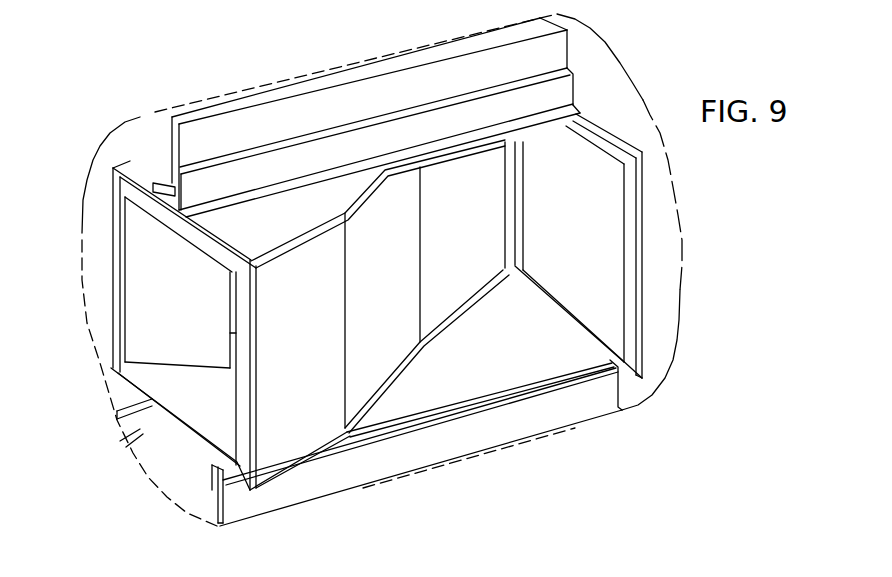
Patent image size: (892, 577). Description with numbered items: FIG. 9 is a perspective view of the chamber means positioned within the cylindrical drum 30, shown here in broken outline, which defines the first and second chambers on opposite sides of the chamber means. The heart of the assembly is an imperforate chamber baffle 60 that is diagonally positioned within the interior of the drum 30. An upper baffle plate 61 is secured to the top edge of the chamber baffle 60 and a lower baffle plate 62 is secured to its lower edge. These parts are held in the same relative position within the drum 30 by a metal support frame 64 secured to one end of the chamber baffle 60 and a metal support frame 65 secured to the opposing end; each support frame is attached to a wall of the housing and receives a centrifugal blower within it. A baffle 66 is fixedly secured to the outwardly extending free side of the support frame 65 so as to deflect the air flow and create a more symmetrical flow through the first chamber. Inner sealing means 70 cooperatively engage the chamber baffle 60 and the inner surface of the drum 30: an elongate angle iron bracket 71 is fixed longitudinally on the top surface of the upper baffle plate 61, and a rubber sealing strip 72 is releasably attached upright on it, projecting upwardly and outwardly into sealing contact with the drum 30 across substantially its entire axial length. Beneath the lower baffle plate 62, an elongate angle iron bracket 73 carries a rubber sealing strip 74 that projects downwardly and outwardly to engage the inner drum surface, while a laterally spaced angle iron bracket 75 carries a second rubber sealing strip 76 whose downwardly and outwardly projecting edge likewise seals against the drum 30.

The cylindrical drum 30 is at (626, 48).
The chamber baffle 60 is at (393, 309).
The upper baffle plate 61 is at (297, 223).
The lower baffle plate 62 is at (220, 406).
The support frame 64 is at (597, 122).
The support frame 65 is at (111, 258).
The baffle 66 is at (187, 311).
The inner sealing means 70 is at (366, 113).
The angle iron bracket 71 is at (284, 175).
The rubber sealing strip 72 is at (240, 130).
The angle iron bracket 73 is at (210, 474).
The rubber sealing strip 74 is at (231, 514).
The angle iron bracket 75 is at (134, 399).
The rubber sealing strip 76 is at (134, 438).